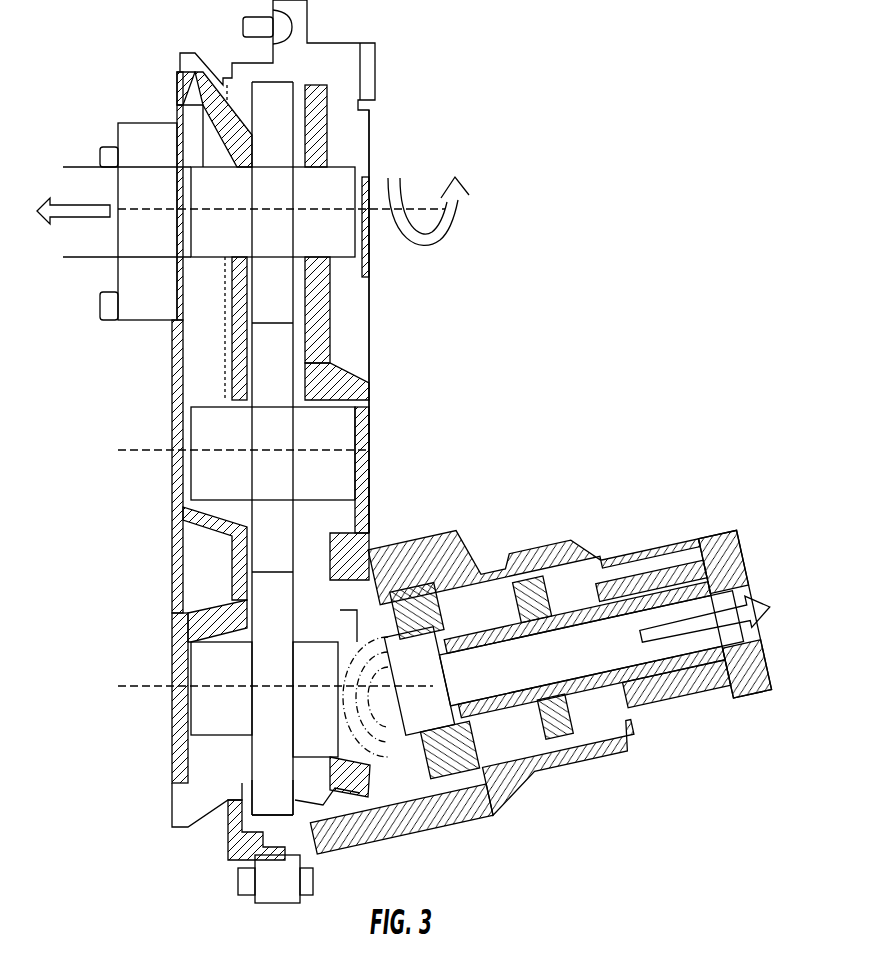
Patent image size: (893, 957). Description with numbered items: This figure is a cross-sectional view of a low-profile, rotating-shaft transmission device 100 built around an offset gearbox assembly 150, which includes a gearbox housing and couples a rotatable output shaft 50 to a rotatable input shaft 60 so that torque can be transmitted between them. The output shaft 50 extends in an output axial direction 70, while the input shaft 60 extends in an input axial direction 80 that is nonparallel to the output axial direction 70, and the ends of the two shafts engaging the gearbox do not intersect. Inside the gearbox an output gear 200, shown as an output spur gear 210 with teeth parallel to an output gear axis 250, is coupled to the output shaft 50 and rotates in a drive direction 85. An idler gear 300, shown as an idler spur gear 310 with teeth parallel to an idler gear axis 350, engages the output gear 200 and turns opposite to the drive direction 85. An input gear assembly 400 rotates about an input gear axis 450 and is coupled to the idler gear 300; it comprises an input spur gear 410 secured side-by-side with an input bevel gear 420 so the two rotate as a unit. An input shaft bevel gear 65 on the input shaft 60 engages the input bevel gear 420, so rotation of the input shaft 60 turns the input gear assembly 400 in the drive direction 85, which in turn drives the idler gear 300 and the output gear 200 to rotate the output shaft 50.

The output shaft 50 is at (342, 235).
The input shaft 60 is at (455, 699).
The input shaft bevel gear 65 is at (457, 738).
The output axial direction 70 is at (62, 225).
The input axial direction 80 is at (658, 624).
The drive direction 85 is at (459, 216).
The low-profile, rotating-shaft transmission device 100 is at (480, 362).
The offset gearbox assembly 150 is at (170, 543).
The output gear 200 is at (180, 124).
The output spur gear 210 is at (287, 96).
The output gear axis 250 is at (138, 207).
The idler gear 300 is at (206, 402).
The idler spur gear 310 is at (288, 356).
The idler gear axis 350 is at (145, 446).
The input gear assembly 400 is at (218, 633).
The input spur gear 410 is at (270, 800).
The input bevel gear 420 is at (353, 782).
The input gear axis 450 is at (152, 683).